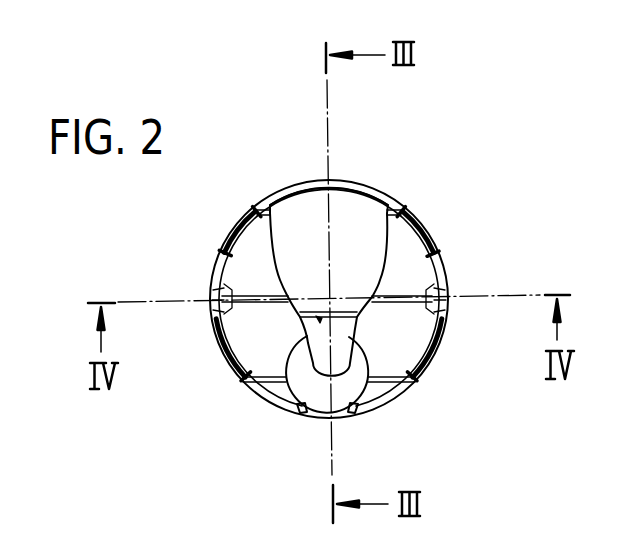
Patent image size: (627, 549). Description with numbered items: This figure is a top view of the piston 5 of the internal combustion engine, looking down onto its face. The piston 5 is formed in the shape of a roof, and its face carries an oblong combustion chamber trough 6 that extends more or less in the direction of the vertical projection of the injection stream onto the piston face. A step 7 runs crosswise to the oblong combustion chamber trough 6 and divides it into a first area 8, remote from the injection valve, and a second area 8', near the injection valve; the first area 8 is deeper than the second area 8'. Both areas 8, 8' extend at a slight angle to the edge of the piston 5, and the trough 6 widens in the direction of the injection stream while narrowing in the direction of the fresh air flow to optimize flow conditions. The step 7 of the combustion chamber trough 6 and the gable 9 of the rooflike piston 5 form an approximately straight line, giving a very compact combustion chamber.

The piston 5 is at (458, 217).
The combustion chamber trough 6 is at (300, 222).
The step 7 is at (304, 366).
The first area 8 is at (348, 193).
The second area 8' is at (394, 349).
The gable 9 is at (259, 303).